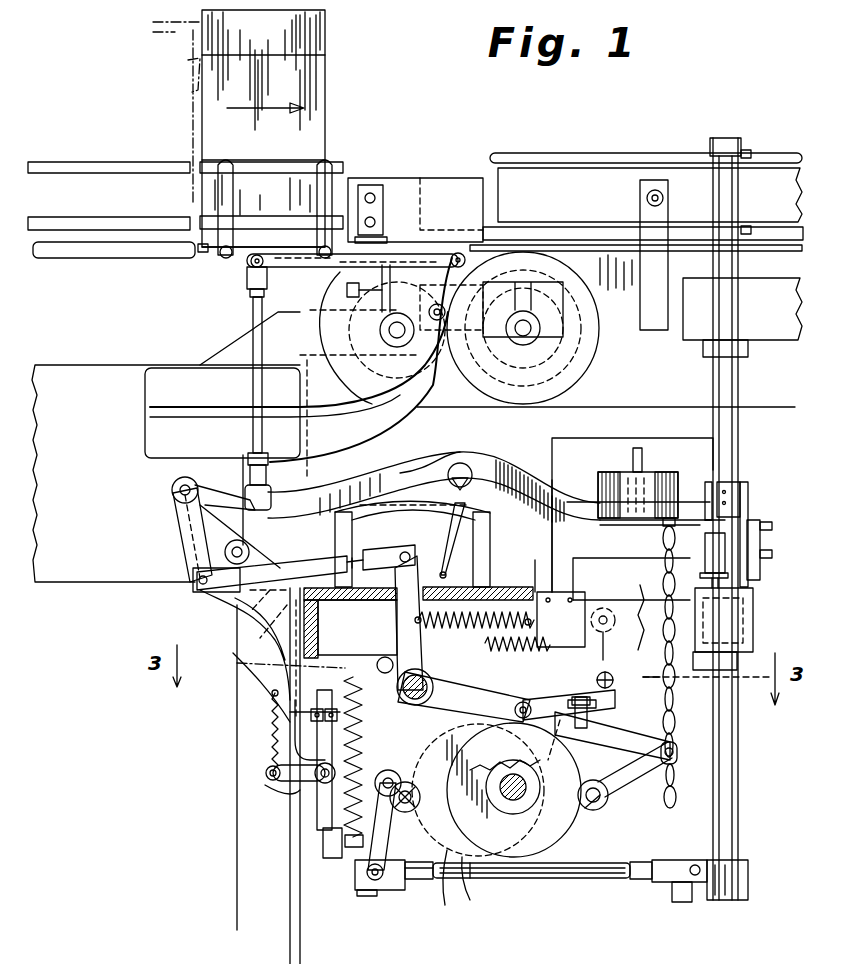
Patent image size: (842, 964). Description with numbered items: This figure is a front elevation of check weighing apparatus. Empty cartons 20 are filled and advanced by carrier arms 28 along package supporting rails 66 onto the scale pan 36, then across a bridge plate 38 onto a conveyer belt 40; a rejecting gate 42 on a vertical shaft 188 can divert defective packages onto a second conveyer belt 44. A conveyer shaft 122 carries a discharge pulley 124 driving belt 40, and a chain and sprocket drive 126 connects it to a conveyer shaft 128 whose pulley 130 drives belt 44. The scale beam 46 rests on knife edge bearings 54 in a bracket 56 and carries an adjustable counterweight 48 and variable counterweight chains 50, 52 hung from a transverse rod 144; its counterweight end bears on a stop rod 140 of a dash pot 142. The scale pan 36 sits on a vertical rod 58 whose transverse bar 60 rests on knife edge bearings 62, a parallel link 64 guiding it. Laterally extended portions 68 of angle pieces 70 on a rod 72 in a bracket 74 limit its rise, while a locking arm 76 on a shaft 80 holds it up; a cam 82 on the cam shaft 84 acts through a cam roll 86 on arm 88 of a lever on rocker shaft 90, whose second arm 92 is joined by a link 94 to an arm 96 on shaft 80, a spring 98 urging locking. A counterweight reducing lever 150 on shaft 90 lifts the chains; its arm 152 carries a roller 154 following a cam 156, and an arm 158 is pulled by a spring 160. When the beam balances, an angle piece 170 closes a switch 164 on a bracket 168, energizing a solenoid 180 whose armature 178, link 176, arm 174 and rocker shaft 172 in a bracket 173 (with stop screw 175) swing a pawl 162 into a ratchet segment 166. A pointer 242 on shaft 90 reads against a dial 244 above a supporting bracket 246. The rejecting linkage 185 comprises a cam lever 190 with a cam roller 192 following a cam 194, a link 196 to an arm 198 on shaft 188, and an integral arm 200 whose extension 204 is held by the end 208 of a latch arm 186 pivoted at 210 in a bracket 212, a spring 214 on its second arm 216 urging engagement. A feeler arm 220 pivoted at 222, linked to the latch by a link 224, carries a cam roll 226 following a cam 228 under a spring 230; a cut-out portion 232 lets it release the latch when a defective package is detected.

The empty cartons 20 is at (325, 80).
The carrier arm 28 is at (190, 108).
The package supporting rails 66 is at (165, 258).
The scale pan 36 is at (210, 255).
The parallel link 64 is at (315, 270).
The bridge plate 38 is at (385, 238).
The conveyer belt 40 is at (470, 245).
The rejecting gate 42 is at (550, 163).
The second conveyer belt 44 is at (750, 251).
The conveyer shaft 122 is at (390, 328).
The conveyer shaft 128 is at (530, 335).
The pulley 130 is at (590, 372).
The chain and sprocket drive 126 is at (500, 375).
The discharge pulley 124 is at (436, 390).
The vertical rod 58 is at (253, 382).
The laterally extended portion 68 is at (255, 453).
The angle pieces 70 is at (243, 470).
The scale pan locking arm 76 is at (205, 488).
The transverse bar 60 is at (282, 470).
The knife edge bearings 62 is at (272, 492).
The shaft 80 is at (172, 492).
The arm 96 is at (178, 520).
The rod 72 is at (225, 553).
The link 94 is at (300, 568).
The graduated arcuate dial 244 is at (412, 520).
The knife edge bearings 54 is at (455, 465).
The scale beam 46 is at (490, 460).
The adjustable counterweight 48 is at (605, 472).
The angle piece 170 is at (705, 482).
The switch 164 is at (725, 500).
The bracket 168 is at (748, 490).
The pointer 242 is at (445, 542).
The second arm 92 is at (400, 578).
The bracket 56 is at (500, 562).
The spring 98 is at (480, 588).
The transverse rod 144 is at (663, 535).
The stop rod 140 is at (765, 558).
The bracket 74 is at (218, 618).
The supporting bracket 246 is at (310, 627).
The second arm 200 is at (330, 662).
The rocker shaft 90 is at (420, 650).
The arm 158 is at (378, 658).
The spring 230 is at (470, 626).
The armature 178 is at (561, 619).
The link 176 is at (605, 632).
The solenoid 180 is at (580, 592).
The pivot 222 is at (620, 600).
The dash pot 142 is at (748, 618).
The extension 204 is at (277, 687).
The end of latch arm 208 is at (273, 700).
The link 224 is at (290, 712).
The bracket 212 is at (311, 720).
The spring 214 is at (300, 742).
The latch arm 186 is at (265, 772).
The second arm 216 is at (265, 788).
The pivot 210 is at (300, 785).
The cam roller 192 is at (325, 800).
The spring 160 is at (345, 800).
The arm 88 is at (432, 680).
The cam roll 86 is at (516, 664).
The arm 152 is at (490, 697).
The rocker shaft 172 is at (600, 690).
The bracket 173 is at (672, 685).
The solenoid operated pawl 162 is at (590, 708).
The adjustable stop screw 175 is at (595, 722).
The arm 174 is at (552, 734).
The chain 52 is at (676, 716).
The counterweight reducing lever 150 is at (676, 760).
The chain 50 is at (674, 806).
The ratchet segment 166 is at (630, 752).
The feeler arm 220 is at (610, 790).
The cam roll 226 is at (603, 810).
The cam shaft 84 is at (520, 800).
The cam 82 is at (575, 822).
The cam 228 is at (560, 865).
The cut-out portion 232 is at (495, 878).
The cam 194 is at (470, 885).
The cam 156 is at (445, 880).
The link 196 is at (590, 880).
The cam operated linkage 185 is at (545, 902).
The arm 198 is at (700, 890).
The vertical shaft 188 is at (740, 813).
The roller 154 is at (392, 830).
The cam lever 190 is at (355, 868).